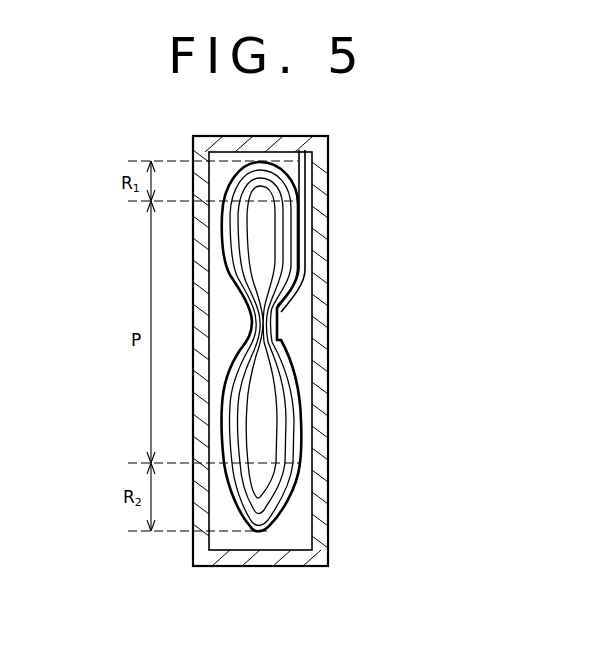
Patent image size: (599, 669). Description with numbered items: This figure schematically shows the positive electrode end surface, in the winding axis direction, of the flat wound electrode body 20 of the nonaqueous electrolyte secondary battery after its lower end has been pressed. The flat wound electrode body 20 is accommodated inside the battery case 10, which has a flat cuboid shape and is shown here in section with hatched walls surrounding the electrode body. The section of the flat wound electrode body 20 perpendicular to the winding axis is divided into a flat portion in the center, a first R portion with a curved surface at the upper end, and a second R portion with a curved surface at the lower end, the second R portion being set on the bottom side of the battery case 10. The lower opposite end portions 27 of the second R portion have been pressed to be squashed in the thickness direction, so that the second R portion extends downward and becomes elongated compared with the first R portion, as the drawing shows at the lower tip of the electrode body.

The battery case 10 is at (328, 515).
The flat wound electrode body 20 is at (290, 368).
The lower opposite end portions 27 is at (282, 517).